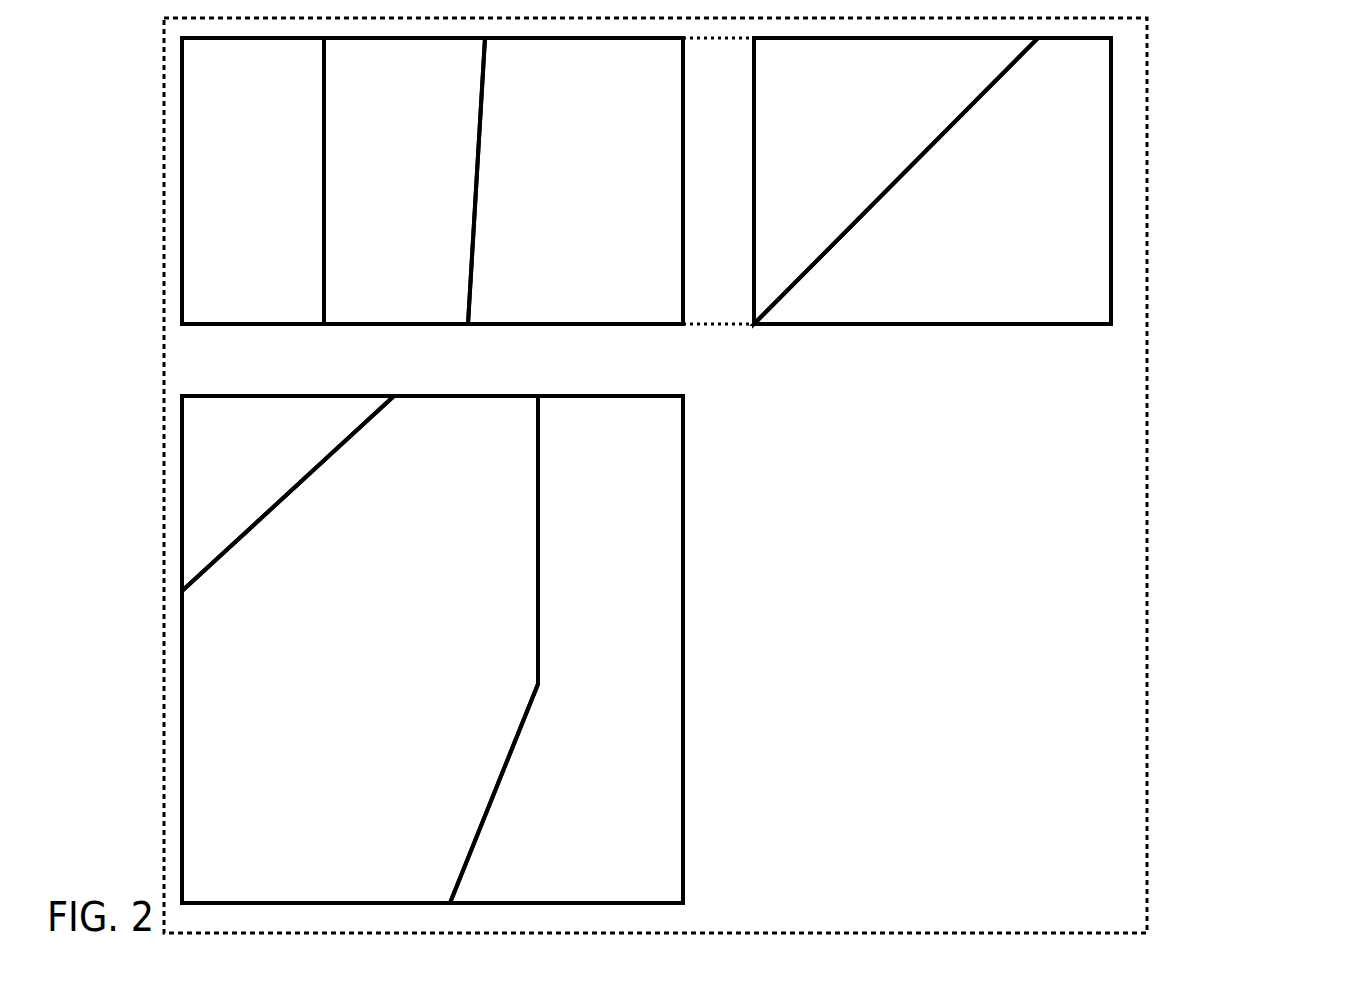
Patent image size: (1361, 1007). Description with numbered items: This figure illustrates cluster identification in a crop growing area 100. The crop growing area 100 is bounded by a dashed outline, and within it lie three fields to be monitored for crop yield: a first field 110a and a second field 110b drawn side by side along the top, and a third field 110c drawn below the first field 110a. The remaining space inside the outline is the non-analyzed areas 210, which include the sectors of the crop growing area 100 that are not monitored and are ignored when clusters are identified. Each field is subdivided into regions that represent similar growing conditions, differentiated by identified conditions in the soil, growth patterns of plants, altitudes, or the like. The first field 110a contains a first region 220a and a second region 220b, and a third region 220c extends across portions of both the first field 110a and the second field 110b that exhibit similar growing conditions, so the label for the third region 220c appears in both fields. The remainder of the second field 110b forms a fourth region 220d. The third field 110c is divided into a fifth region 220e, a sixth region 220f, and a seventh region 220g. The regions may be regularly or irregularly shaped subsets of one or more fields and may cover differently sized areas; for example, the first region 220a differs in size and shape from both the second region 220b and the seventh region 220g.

The crop growing area 100 is at (1278, 142).
The non-analyzed areas 210 is at (940, 672).
The first field 110a is at (682, 324).
The second field 110b is at (1007, 323).
The third field 110c is at (682, 552).
The first region 220a is at (270, 177).
The second region 220b is at (413, 176).
The third region 220c is at (597, 176).
The fourth region 220d is at (1010, 242).
The fifth region 220e is at (270, 477).
The sixth region 220f is at (360, 691).
The seventh region 220g is at (638, 618).